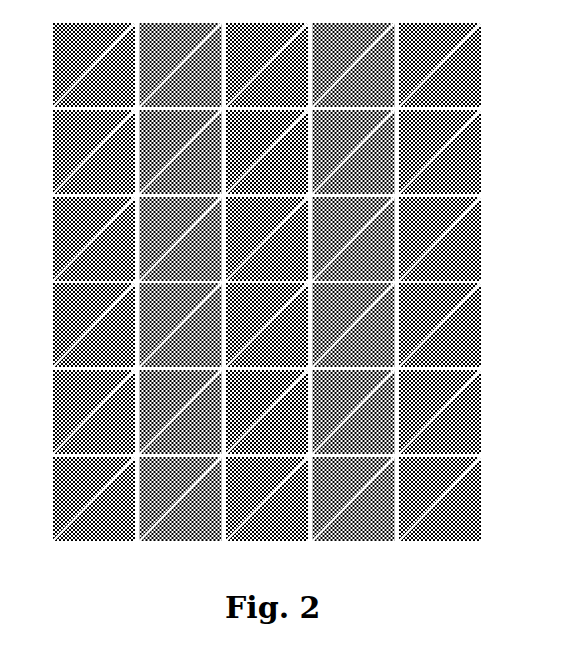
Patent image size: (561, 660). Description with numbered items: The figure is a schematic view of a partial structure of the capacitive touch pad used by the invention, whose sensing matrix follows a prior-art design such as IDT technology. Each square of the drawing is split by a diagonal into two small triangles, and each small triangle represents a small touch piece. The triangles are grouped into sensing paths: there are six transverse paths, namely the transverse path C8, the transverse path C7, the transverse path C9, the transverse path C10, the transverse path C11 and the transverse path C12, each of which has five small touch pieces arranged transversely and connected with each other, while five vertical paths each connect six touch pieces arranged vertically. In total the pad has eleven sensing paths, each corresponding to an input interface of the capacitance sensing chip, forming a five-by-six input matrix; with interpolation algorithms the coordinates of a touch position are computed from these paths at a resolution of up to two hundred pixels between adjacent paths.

The transverse path C12 is at (267, 65).
The transverse path C11 is at (267, 152).
The transverse path C10 is at (267, 239).
The transverse path C9 is at (267, 325).
The transverse path C7 is at (267, 412).
The transverse path C8 is at (267, 499).